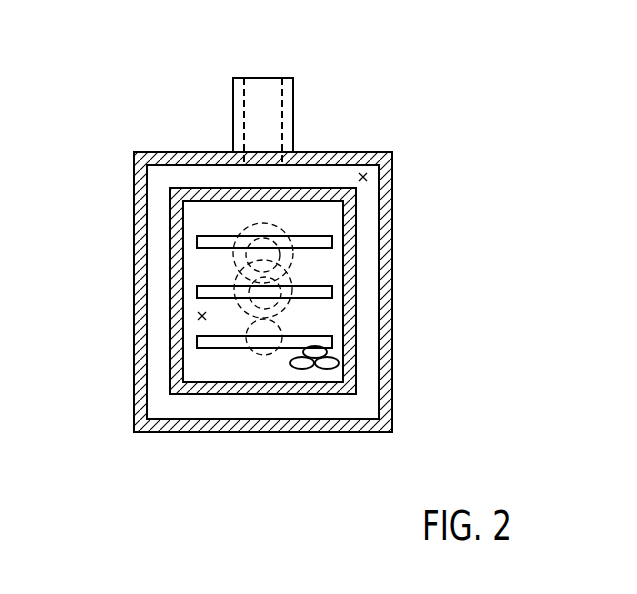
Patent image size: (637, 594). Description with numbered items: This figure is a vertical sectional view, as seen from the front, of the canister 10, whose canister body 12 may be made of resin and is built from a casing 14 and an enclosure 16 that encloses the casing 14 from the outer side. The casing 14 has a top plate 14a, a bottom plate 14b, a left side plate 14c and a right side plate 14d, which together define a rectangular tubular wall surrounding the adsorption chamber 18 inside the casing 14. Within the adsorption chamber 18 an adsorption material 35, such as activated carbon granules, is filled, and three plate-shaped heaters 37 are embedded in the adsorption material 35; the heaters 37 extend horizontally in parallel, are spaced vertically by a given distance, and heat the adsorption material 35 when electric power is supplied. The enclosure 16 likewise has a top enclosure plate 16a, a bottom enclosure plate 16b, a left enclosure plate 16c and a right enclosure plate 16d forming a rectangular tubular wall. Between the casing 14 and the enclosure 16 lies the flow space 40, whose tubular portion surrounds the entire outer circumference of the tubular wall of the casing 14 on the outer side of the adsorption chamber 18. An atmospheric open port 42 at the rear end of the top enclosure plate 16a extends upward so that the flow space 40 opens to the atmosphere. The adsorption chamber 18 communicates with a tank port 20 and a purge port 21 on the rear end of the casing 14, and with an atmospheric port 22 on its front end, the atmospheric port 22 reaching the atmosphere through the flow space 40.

The canister 10 is at (382, 104).
The canister body 12 is at (418, 189).
The casing 14 is at (170, 259).
The top plate 14a is at (202, 188).
The bottom plate 14b is at (200, 388).
The left side plate 14c is at (177, 372).
The right side plate 14d is at (347, 302).
The enclosure 16 is at (392, 268).
The top enclosure plate 16a is at (318, 157).
The bottom enclosure plate 16b is at (332, 427).
The left enclosure plate 16c is at (138, 183).
The right enclosure plate 16d is at (387, 343).
The adsorption chamber 18 is at (197, 316).
The tank port 20 is at (297, 260).
The purge port 21 is at (263, 353).
The atmospheric port 22 is at (300, 318).
The adsorption material 35 is at (337, 363).
The heaters 37 is at (197, 241).
The flow space 40 is at (390, 161).
The atmospheric open port 42 is at (240, 100).